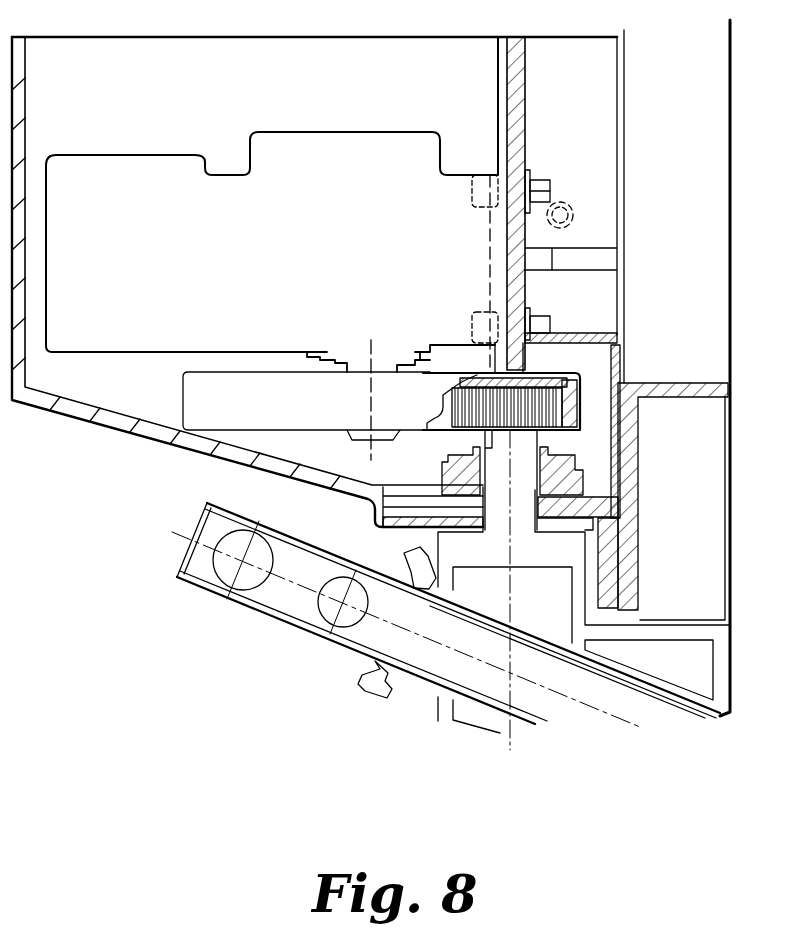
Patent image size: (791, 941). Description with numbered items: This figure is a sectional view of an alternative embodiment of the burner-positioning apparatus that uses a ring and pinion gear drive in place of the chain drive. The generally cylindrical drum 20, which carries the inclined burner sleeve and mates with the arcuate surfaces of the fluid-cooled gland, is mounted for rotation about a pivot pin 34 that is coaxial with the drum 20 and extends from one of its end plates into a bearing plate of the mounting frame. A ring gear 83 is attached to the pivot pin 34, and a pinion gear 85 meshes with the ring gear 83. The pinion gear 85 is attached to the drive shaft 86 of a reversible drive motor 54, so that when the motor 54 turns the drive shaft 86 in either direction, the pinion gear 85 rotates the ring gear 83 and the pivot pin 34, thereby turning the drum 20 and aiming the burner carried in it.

The drum 20 is at (732, 652).
The pivot pin 34 is at (525, 443).
The reversible drive motor 54 is at (384, 246).
The ring gear 83 is at (473, 431).
The pinion gear 85 is at (322, 430).
The drive shaft 86 is at (388, 440).